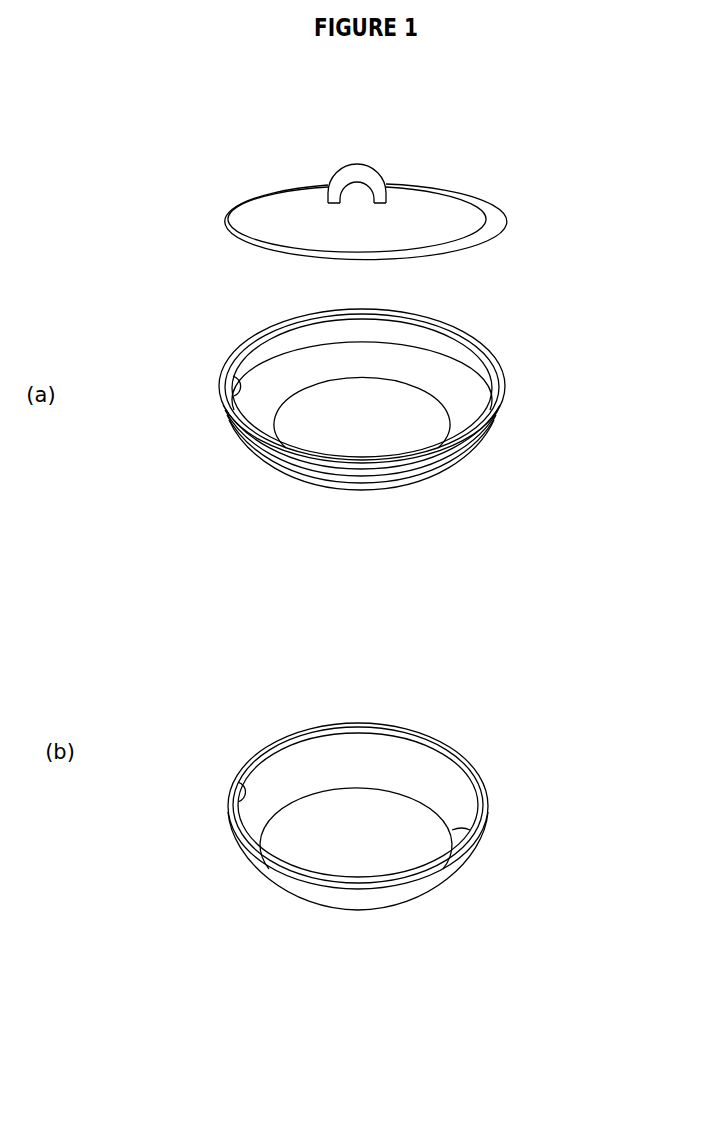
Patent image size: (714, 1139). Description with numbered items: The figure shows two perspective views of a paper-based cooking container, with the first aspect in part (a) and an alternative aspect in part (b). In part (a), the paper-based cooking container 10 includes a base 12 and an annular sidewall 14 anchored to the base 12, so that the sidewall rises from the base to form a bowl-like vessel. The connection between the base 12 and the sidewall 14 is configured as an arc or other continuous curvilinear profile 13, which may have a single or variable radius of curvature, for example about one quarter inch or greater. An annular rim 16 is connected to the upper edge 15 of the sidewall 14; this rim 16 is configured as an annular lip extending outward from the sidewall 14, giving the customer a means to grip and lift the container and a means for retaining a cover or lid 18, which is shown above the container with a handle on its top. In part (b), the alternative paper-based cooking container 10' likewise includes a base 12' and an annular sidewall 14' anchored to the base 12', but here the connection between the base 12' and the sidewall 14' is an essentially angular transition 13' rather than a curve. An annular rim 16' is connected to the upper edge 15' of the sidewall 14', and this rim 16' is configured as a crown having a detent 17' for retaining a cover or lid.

The paper-based cooking container 10 is at (360, 396).
The base 12 is at (362, 411).
The curvilinear profile 13 is at (384, 433).
The annular sidewall 14 is at (383, 412).
The upper edge 15 is at (338, 397).
The annular rim 16 is at (381, 391).
The lid 18 is at (528, 184).
The paper-based cooking container 10' is at (361, 814).
The base 12' is at (360, 825).
The angular transition 13' is at (498, 851).
The annular sidewall 14' is at (402, 828).
The upper edge 15' is at (327, 805).
The annular rim 16' is at (375, 805).
The detent 17' is at (345, 861).